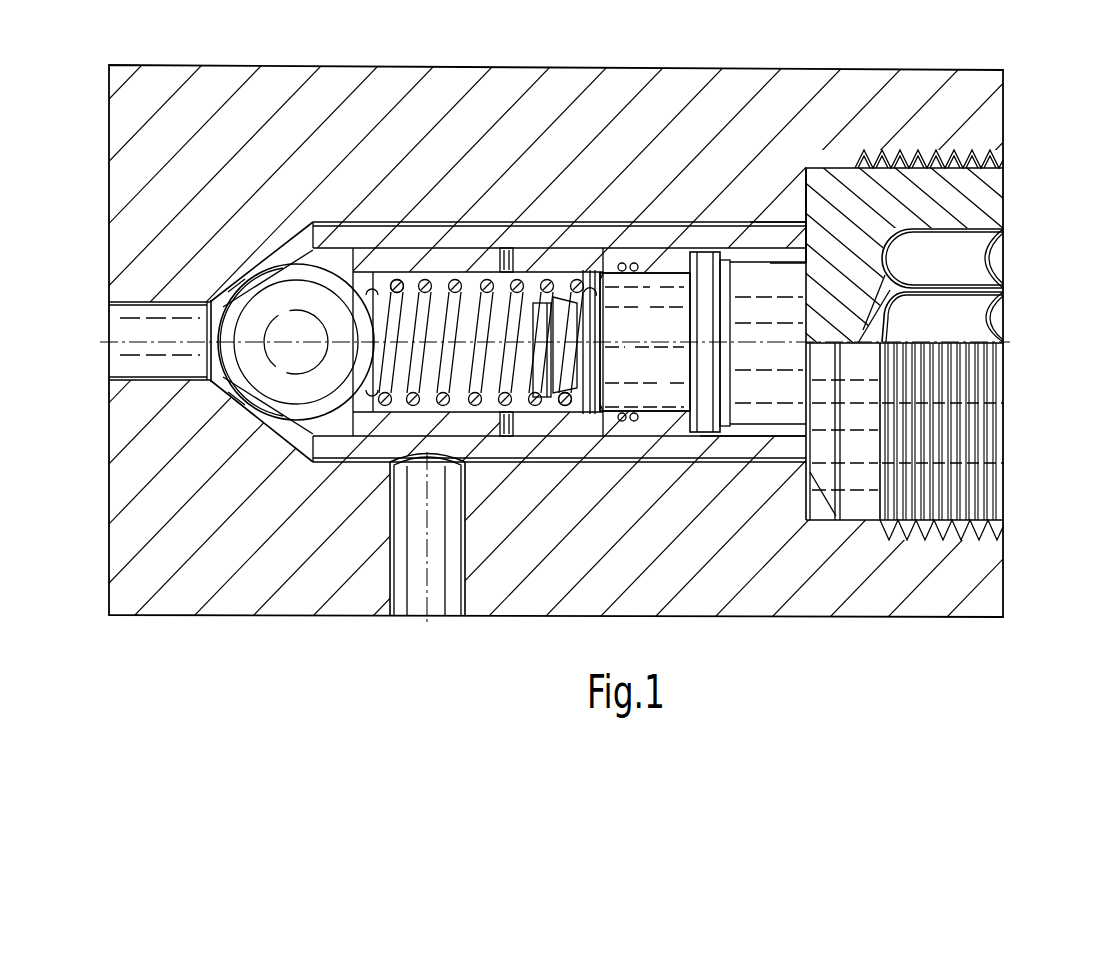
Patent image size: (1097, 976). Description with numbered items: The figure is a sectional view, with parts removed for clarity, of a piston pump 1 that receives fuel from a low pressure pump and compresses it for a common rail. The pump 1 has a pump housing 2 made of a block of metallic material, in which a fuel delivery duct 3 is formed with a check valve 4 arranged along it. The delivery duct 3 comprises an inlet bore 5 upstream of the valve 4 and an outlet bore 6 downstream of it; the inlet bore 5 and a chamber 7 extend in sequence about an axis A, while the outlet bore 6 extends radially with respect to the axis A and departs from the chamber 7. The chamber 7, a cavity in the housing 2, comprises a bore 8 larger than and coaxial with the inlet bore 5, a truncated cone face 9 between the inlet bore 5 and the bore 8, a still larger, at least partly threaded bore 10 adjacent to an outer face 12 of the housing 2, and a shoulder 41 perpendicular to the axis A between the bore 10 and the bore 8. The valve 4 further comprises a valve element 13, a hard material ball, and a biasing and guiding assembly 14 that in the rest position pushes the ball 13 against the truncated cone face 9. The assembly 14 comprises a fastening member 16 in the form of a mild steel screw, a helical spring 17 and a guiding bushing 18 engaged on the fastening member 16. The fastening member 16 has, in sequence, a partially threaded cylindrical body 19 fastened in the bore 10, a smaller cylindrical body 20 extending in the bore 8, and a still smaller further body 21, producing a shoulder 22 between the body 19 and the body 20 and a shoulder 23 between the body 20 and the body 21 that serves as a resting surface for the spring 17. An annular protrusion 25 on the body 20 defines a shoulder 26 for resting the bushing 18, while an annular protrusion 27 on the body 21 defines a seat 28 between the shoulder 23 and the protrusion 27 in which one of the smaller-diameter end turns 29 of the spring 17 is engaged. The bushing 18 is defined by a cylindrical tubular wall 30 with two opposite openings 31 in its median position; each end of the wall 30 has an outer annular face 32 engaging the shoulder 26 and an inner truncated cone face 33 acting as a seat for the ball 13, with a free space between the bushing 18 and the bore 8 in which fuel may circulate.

The piston pump 1 is at (788, 47).
The pump housing 2 is at (575, 105).
The fuel delivery duct 3 is at (124, 379).
The check valve 4 is at (690, 257).
The inlet bore 5 is at (137, 303).
The outlet bore 6 is at (468, 573).
The chamber 7 is at (575, 243).
The bore 8 is at (350, 228).
The truncated cone face 9 is at (272, 268).
The bore 10 is at (900, 191).
The outer face 12 is at (978, 148).
The valve element 13 is at (247, 320).
The biasing and guiding assembly 14 is at (768, 442).
The fastening member 16 is at (1016, 412).
The helical spring 17 is at (440, 318).
The guiding bushing 18 is at (403, 250).
The cylindrical body 19 is at (976, 207).
The cylindrical body 20 is at (652, 395).
The further body 21 is at (555, 405).
The shoulder 22 is at (768, 215).
The shoulder 23 is at (585, 410).
The annular protrusion 25 is at (705, 430).
The shoulder 26 is at (633, 265).
The annular protrusion 27 is at (545, 243).
The seat 28 is at (622, 262).
The end turns 29 is at (387, 275).
The cylindrical tubular wall 30 is at (373, 428).
The openings 31 is at (478, 262).
The outer annular face 32 is at (305, 250).
The inner truncated cone face 33 is at (293, 430).
The shoulder 41 is at (806, 205).
The axis A is at (1008, 343).